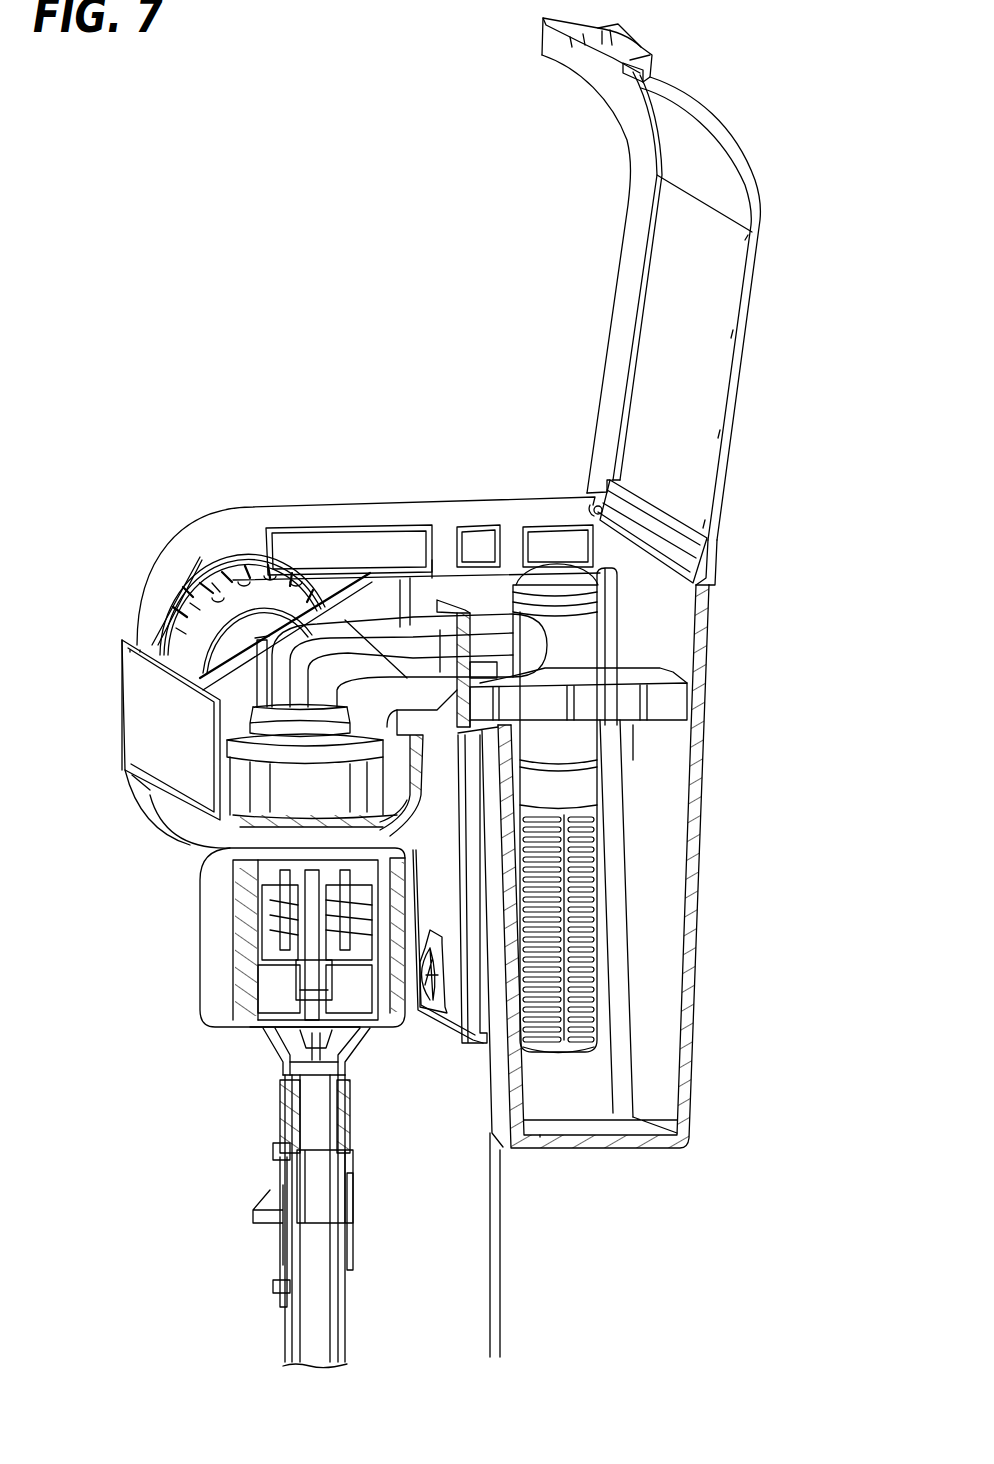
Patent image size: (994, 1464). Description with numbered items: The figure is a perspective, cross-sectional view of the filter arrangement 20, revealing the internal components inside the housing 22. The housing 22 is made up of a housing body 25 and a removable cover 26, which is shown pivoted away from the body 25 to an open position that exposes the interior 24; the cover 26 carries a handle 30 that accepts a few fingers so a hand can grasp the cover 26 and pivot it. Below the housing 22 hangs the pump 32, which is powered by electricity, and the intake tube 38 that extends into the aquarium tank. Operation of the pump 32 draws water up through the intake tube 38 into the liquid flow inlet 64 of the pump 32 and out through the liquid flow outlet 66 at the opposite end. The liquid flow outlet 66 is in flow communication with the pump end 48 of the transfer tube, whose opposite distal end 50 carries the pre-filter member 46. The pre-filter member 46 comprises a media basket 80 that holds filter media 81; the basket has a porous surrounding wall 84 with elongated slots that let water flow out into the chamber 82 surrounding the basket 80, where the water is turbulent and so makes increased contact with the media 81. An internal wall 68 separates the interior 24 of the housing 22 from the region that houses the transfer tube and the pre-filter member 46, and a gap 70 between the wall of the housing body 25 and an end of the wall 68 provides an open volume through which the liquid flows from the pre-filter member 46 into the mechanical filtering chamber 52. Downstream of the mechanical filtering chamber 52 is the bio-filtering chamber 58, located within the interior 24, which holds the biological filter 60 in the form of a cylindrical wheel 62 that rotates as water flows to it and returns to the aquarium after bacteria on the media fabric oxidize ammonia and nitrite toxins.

The filter arrangement 20 is at (264, 206).
The housing 22 is at (700, 800).
The interior 24 is at (348, 507).
The housing body 25 is at (695, 845).
The cover 26 is at (752, 282).
The handle 30 is at (623, 37).
The pump 32 is at (178, 937).
The intake tube 38 is at (288, 1312).
The pre-filter member 46 is at (645, 977).
The pump end 48 is at (265, 728).
The distal end 50 is at (540, 648).
The mechanical filtering chamber 52 is at (549, 540).
The bio-filtering chamber 58 is at (166, 575).
The biological filter 60 is at (178, 622).
The cylindrical wheel 62 is at (233, 578).
The liquid flow inlet 64 is at (286, 1025).
The liquid flow outlet 66 is at (252, 830).
The internal wall 68 is at (485, 588).
The gap 70 is at (628, 760).
The media basket 80 is at (600, 880).
The filter media 81 is at (586, 1017).
The chamber 82 is at (548, 1098).
The porous surrounding wall 84 is at (592, 935).